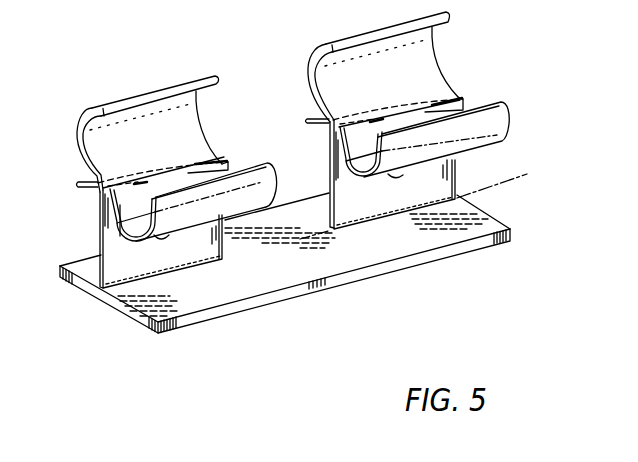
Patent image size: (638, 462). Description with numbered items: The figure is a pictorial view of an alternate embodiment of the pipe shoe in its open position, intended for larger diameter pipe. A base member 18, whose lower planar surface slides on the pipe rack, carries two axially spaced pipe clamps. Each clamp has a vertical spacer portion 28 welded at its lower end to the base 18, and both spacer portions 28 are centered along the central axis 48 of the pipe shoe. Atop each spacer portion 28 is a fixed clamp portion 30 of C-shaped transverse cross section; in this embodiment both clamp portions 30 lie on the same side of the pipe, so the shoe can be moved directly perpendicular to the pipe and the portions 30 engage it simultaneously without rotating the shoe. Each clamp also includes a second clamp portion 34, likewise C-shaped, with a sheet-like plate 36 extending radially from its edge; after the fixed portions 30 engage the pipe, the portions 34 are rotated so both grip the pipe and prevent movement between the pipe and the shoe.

The base member 18 is at (283, 275).
The vertical spacer portion 28 is at (122, 267).
The clamp portion 30 is at (100, 143).
The second clamp portion 34 is at (171, 208).
The sheet-like plate 36 is at (78, 183).
The central axis 48 is at (520, 177).